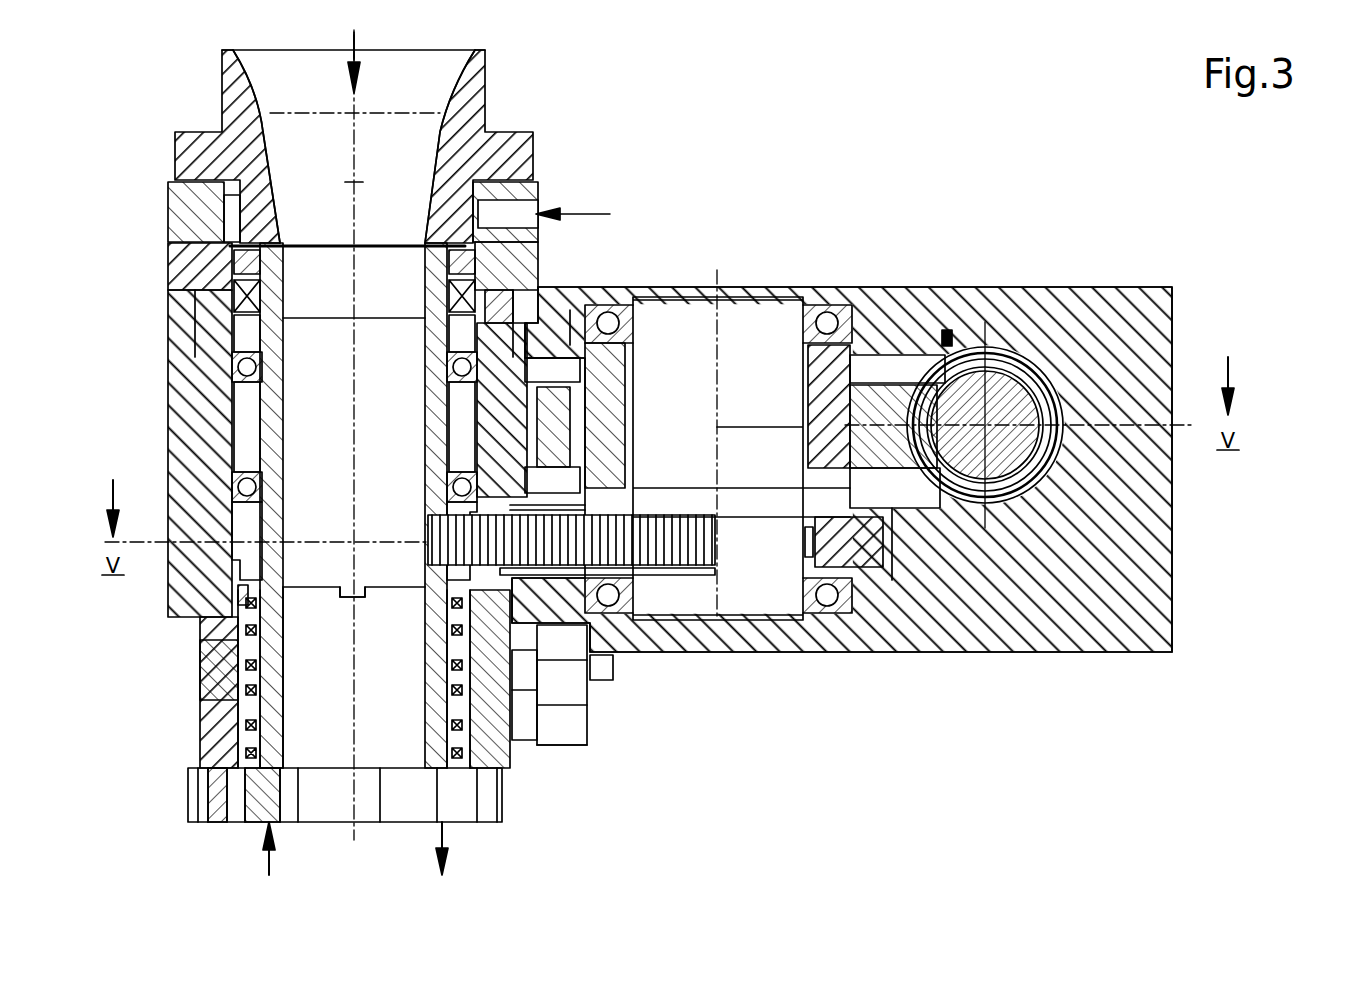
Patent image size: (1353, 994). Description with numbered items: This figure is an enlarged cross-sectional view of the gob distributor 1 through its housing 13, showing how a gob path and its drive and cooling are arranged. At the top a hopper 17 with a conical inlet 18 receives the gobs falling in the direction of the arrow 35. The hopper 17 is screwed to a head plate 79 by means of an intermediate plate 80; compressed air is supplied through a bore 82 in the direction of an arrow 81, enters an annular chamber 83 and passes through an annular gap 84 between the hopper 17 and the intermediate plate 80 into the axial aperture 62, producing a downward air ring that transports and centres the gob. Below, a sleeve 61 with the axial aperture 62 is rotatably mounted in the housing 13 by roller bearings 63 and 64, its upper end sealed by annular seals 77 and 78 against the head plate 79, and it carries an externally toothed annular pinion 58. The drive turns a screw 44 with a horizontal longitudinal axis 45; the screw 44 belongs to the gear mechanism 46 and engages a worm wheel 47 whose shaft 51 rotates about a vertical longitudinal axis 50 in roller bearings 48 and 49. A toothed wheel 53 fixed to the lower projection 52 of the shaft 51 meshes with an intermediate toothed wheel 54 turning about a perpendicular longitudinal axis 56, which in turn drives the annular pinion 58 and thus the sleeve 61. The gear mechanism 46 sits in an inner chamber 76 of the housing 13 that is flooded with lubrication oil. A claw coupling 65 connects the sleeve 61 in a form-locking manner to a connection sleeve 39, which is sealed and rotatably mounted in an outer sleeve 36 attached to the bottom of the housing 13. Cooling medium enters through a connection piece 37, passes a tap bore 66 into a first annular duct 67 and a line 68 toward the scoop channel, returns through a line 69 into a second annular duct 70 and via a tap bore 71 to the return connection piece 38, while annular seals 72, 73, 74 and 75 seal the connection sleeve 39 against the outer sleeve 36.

The machine tool spindle device 1 is at (752, 152).
The housing 13 is at (178, 330).
The hopper 17 is at (472, 68).
The conical bore 18 is at (362, 94).
The arrow 35 is at (360, 34).
The outer sleeve 36 is at (212, 700).
The connection piece 37 is at (590, 660).
The connection piece 38 is at (582, 740).
The connection sleeve 39 is at (206, 796).
The screw 44 is at (1030, 410).
The horizontal longitudinal axis 45 is at (1000, 345).
The gear mechanism 46 is at (778, 602).
The worm wheel 47 is at (866, 345).
The roller bearing 48 is at (825, 322).
The roller bearing 49 is at (830, 597).
The vertical longitudinal axis 50 is at (722, 272).
The shaft 51 is at (682, 360).
The lower projection 52 is at (733, 560).
The toothed wheel 53 is at (880, 560).
The intermediate toothed wheel 54 is at (432, 590).
The perpendicular longitudinal axis 56 is at (596, 455).
The annular pinion 58 is at (234, 528).
The sleeve 61 is at (264, 410).
The axial aperture 62 is at (300, 430).
The roller bearing 63 is at (248, 367).
The roller bearing 64 is at (248, 487).
The claw coupling 65 is at (345, 598).
The tap bore 66 is at (532, 678).
The first annular duct 67 is at (226, 660).
The line 68 is at (462, 668).
The line 69 is at (284, 746).
The second annular duct 70 is at (244, 722).
The tap bore 71 is at (458, 722).
The annular seal 72 is at (244, 748).
The annular seal 73 is at (228, 678).
The annular seal 74 is at (216, 640).
The annular seal 75 is at (244, 597).
The inner chamber 76 is at (904, 365).
The annular seal 77 is at (266, 290).
The annular seal 78 is at (262, 272).
The head plate 79 is at (530, 272).
The intermediate plate 80 is at (186, 205).
The arrow 81 is at (608, 214).
The bore 82 is at (530, 194).
The annular chamber 83 is at (236, 222).
The annular gap 84 is at (272, 240).